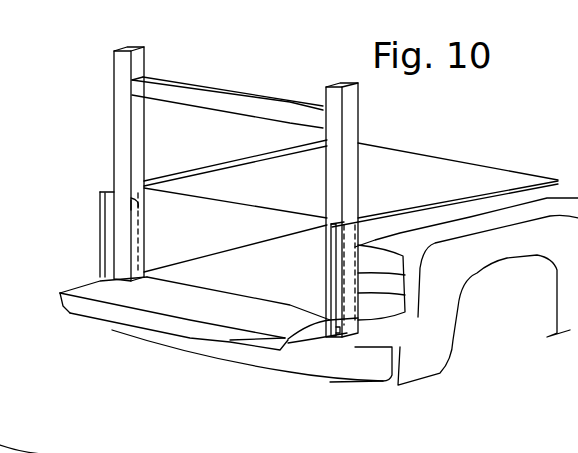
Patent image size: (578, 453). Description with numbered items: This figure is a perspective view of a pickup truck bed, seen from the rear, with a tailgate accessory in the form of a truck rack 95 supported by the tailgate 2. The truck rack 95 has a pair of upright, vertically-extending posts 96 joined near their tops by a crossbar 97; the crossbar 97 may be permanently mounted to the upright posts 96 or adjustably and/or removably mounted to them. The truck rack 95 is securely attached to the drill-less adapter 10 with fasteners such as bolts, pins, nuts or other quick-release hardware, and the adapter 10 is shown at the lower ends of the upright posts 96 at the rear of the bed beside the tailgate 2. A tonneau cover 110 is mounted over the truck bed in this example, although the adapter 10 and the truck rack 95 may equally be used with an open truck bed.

The tailgate 2 is at (123, 313).
The drill-less adapter 10 is at (100, 240).
The truck rack 95 is at (114, 152).
The upright posts 96 is at (325, 178).
The crossbar 97 is at (190, 83).
The tonneau cover 110 is at (427, 198).